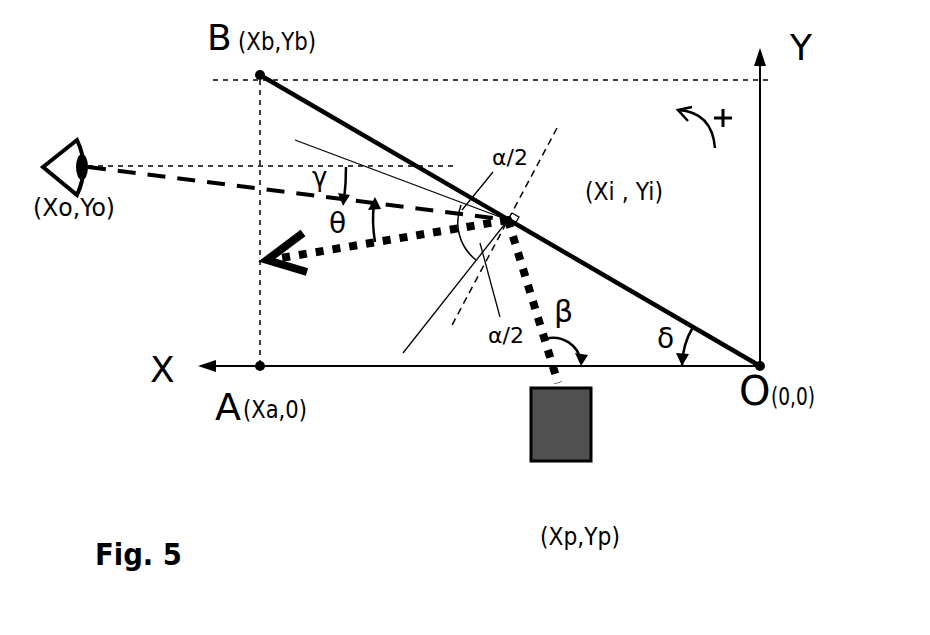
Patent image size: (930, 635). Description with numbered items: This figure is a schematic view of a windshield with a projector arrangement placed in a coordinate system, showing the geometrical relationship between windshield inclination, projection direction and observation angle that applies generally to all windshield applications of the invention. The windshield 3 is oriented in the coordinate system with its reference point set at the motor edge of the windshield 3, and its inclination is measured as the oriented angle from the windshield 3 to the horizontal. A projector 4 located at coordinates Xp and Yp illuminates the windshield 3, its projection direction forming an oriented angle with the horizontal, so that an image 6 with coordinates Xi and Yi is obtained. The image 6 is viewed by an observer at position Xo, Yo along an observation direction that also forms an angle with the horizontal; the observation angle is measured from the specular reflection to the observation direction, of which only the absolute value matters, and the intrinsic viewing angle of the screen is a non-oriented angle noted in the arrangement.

The windshield 3 is at (658, 304).
The projector 4 is at (547, 437).
The image 6 is at (510, 219).